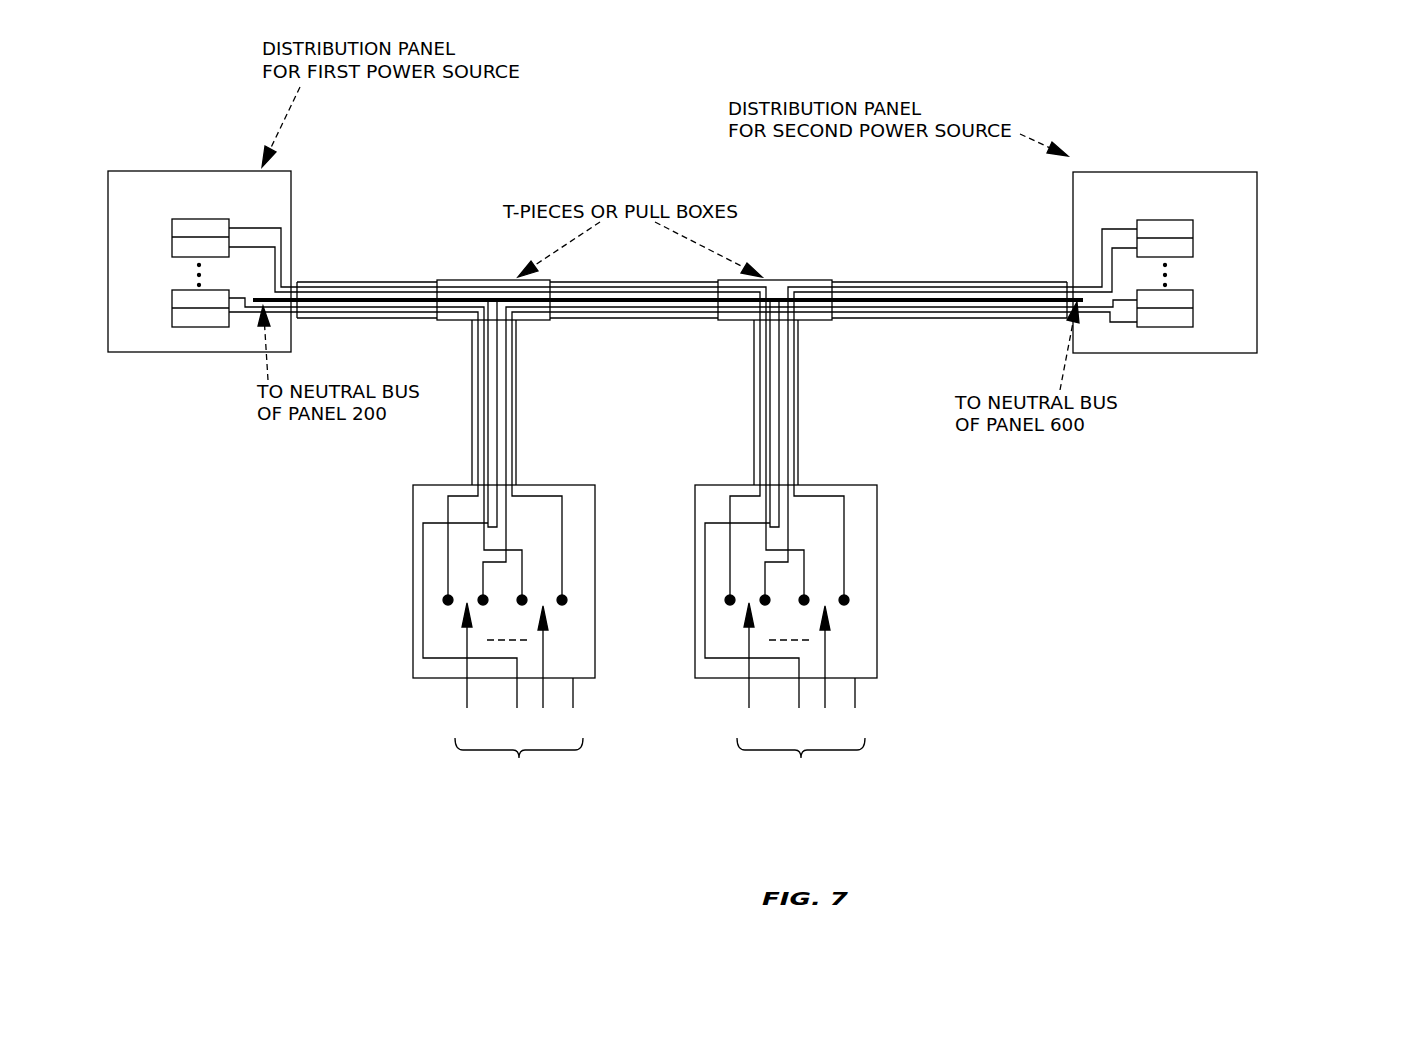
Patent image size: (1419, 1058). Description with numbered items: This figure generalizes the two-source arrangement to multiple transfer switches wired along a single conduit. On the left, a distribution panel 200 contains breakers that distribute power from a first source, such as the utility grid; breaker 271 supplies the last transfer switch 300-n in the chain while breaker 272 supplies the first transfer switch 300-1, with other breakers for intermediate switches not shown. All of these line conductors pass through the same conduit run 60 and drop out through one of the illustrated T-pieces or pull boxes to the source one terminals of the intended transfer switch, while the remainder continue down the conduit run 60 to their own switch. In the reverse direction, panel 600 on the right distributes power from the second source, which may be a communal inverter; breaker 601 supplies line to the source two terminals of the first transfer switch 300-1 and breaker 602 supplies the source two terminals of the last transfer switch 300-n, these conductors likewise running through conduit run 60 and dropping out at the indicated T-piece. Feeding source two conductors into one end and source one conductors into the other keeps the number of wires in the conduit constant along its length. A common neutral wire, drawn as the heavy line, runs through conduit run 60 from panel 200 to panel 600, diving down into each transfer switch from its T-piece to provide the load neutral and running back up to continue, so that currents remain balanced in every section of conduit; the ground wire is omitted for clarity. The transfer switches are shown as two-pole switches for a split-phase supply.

The distribution panel 200 is at (222, 203).
The panel 600 is at (1185, 203).
The breaker 271 is at (244, 213).
The breaker 272 is at (166, 313).
The breaker 602 is at (1201, 194).
The breaker 601 is at (1180, 343).
The conduit run 60 is at (906, 267).
The first transfer switch 300-1 is at (403, 687).
The last transfer switch 300-n is at (881, 691).